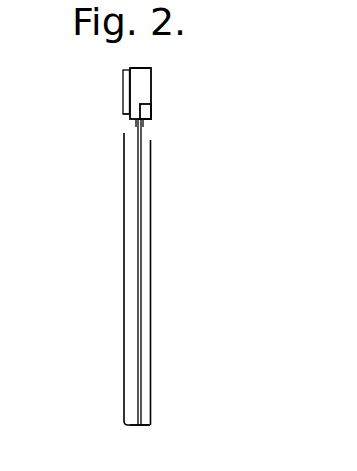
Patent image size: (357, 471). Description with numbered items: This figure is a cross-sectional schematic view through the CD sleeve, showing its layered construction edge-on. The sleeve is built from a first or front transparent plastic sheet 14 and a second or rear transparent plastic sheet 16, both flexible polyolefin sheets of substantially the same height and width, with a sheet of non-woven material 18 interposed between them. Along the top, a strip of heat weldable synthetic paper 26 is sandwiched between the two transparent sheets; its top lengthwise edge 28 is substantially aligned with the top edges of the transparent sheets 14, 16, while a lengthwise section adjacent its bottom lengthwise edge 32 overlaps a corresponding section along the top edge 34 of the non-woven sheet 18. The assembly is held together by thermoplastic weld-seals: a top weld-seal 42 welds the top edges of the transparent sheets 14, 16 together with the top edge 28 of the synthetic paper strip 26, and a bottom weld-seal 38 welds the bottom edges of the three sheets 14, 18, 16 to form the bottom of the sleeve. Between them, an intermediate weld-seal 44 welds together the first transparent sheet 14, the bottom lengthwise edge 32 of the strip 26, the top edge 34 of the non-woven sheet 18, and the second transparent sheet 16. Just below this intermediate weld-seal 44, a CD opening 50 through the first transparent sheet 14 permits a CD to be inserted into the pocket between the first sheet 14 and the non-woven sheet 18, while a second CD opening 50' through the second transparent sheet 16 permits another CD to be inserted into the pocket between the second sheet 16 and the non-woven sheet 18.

The first transparent plastic sheet 14 is at (123, 292).
The second transparent plastic sheet 16 is at (152, 267).
The sheet of non-woven material 18 is at (143, 180).
The synthetic paper strip 26 is at (130, 98).
The top lengthwise edge 28 is at (123, 66).
The bottom lengthwise edge 32 is at (124, 123).
The top edge of the non-woven sheet 34 is at (150, 108).
The bottom weld-seal 38 is at (130, 427).
The top weld-seal 42 is at (148, 50).
The intermediate weld-seal 44 is at (140, 128).
The CD opening 50 is at (87, 130).
The second CD opening 50' is at (174, 142).